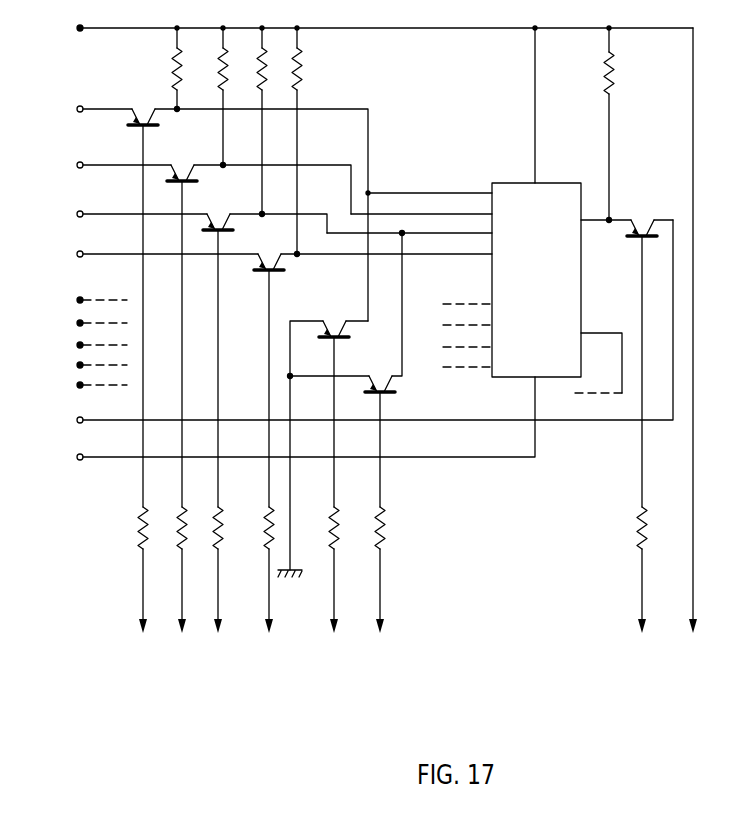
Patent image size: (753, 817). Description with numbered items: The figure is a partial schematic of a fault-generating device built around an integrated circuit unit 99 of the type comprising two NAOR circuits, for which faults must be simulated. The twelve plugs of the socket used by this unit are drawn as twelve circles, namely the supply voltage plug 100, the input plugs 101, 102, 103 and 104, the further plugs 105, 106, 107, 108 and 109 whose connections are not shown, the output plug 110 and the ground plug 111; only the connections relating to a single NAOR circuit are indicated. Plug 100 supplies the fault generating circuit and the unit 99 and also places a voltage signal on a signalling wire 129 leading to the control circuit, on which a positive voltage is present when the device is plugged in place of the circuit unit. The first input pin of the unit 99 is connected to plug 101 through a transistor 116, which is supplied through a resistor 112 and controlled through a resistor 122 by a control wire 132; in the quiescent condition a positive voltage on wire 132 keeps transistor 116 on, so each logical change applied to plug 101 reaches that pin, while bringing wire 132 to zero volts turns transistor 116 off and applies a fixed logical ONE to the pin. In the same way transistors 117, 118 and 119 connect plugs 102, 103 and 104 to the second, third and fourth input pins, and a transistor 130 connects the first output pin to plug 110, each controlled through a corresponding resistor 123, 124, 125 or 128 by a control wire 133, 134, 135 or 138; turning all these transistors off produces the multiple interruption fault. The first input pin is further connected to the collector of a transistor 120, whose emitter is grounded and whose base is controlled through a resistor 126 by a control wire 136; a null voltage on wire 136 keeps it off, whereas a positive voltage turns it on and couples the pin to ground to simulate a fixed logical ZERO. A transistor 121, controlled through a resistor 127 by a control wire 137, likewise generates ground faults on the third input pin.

The integrated circuit unit 99 is at (576, 179).
The supply voltage plug 100 is at (77, 28).
The input plug 101 is at (77, 111).
The input plug 102 is at (77, 167).
The input plug 103 is at (77, 216).
The input plug 104 is at (77, 256).
The plug 105 is at (83, 299).
The plug 106 is at (83, 322).
The plug 107 is at (83, 344).
The plug 108 is at (83, 364).
The plug 109 is at (83, 384).
The output plug 110 is at (356, 324).
The ground plug 111 is at (287, 421).
The resistor 112 is at (176, 66).
The transistor 116 is at (147, 299).
The transistor 117 is at (185, 327).
The transistor 118 is at (221, 352).
The transistor 119 is at (272, 371).
The transistor 120 is at (323, 440).
The transistor 121 is at (347, 369).
The resistor 122 is at (137, 517).
The resistor 123 is at (176, 517).
The resistor 124 is at (212, 517).
The resistor 125 is at (263, 517).
The resistor 126 is at (328, 517).
The resistor 127 is at (374, 517).
The resistor 128 is at (636, 517).
The signalling wire 129 is at (697, 343).
The transistor 130 is at (627, 354).
The control wire 132 is at (149, 638).
The control wire 133 is at (186, 638).
The control wire 134 is at (222, 638).
The control wire 135 is at (266, 639).
The control wire 136 is at (334, 638).
The control wire 137 is at (379, 638).
The control wire 138 is at (640, 639).